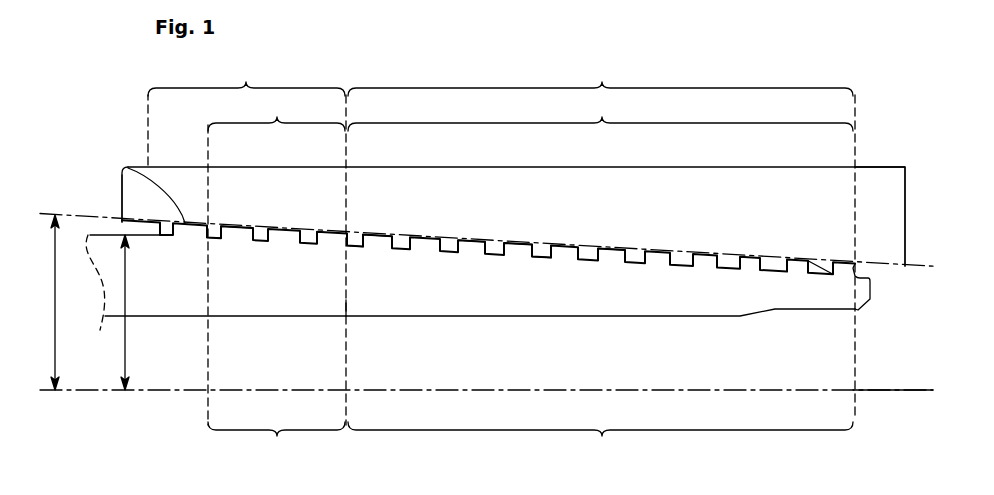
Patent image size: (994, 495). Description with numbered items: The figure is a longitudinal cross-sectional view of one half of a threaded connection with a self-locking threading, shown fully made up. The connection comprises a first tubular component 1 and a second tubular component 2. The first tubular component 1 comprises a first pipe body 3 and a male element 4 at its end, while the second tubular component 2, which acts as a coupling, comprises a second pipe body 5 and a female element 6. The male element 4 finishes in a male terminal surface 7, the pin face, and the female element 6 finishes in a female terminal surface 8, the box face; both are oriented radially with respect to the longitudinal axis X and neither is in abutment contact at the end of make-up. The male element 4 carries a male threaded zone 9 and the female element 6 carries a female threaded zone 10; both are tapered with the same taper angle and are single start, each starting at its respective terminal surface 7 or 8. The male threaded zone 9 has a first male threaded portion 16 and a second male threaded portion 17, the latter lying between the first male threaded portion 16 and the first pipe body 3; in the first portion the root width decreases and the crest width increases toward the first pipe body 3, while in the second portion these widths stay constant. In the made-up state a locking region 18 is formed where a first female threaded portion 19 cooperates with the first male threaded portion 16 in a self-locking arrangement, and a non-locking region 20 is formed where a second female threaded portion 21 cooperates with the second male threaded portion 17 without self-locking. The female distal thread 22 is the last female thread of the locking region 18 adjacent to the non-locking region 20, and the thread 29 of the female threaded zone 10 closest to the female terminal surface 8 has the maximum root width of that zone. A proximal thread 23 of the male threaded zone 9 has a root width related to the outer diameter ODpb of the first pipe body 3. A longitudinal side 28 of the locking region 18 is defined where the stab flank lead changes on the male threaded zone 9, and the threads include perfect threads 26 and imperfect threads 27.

The first tubular component 1 is at (160, 303).
The second tubular component 2 is at (462, 207).
The first pipe body 3 is at (105, 262).
The male element 4 is at (472, 252).
The second pipe body 5 is at (873, 200).
The female element 6 is at (403, 213).
The male terminal surface 7 is at (873, 292).
The female terminal surface 8 is at (121, 190).
The male threaded zone 9 is at (610, 261).
The female threaded zone 10 is at (541, 246).
The first male threaded portion 16 is at (600, 443).
The second male threaded portion 17 is at (276, 443).
The locking region 18 is at (601, 257).
The first female threaded portion 19 is at (599, 242).
The non-locking region 20 is at (276, 260).
The second female threaded portion 21 is at (246, 112).
The female distal thread 22 is at (351, 235).
The proximal thread 23 is at (215, 240).
The perfect threads 26 is at (377, 246).
The imperfect threads 27 is at (245, 240).
The longitudinal side 28 is at (345, 290).
The thread 29 is at (160, 207).
The longitudinal axis X is at (913, 392).
The outer diameter of the first pipe body ODpb is at (125, 336).